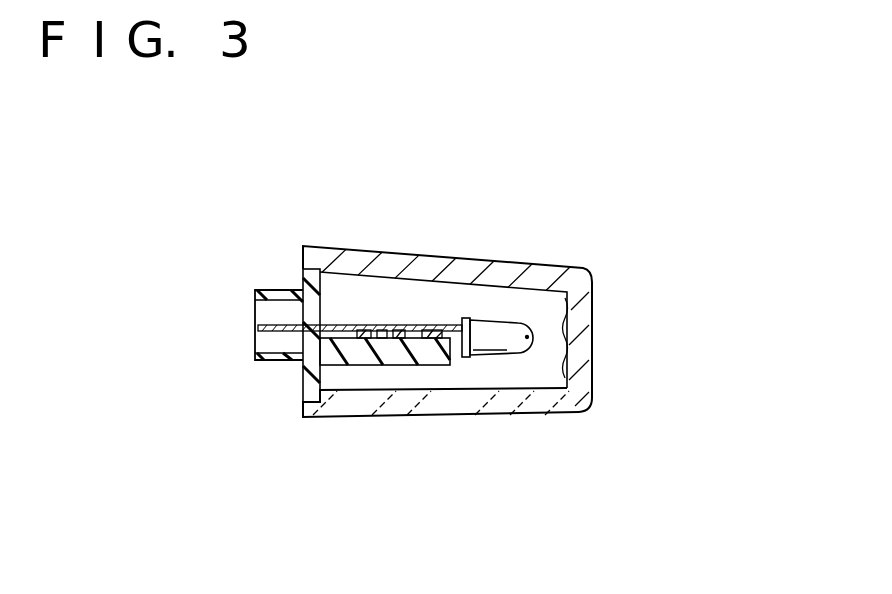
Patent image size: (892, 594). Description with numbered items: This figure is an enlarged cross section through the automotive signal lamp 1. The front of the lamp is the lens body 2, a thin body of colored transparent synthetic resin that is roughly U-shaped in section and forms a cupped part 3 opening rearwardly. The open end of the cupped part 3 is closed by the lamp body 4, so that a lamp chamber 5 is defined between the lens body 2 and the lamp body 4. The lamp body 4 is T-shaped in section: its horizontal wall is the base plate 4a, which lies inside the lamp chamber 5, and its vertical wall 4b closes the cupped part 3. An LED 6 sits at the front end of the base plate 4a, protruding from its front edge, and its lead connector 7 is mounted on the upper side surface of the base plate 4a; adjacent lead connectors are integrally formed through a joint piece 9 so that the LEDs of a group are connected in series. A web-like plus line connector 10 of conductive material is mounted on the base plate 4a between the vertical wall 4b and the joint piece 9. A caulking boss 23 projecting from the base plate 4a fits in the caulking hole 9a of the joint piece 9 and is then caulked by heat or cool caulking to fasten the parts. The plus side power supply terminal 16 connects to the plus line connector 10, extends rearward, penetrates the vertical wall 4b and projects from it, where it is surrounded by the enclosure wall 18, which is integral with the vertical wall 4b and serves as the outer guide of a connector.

The automotive signal lamp 1 is at (555, 207).
The lens body 2 is at (588, 276).
The cupped part 3 is at (470, 381).
The lamp body 4 is at (302, 385).
The base plate 4a is at (370, 365).
The vertical wall 4b is at (303, 268).
The lamp chamber 5 is at (530, 367).
The LED 6 is at (520, 327).
The lead connector 7 is at (465, 318).
The joint piece 9 is at (440, 327).
The caulking hole 9a is at (428, 333).
The plus line connector 10 is at (366, 337).
The plus side power supply terminal 16 is at (255, 314).
The enclosure wall 18 is at (255, 291).
The caulking boss 23 is at (386, 334).